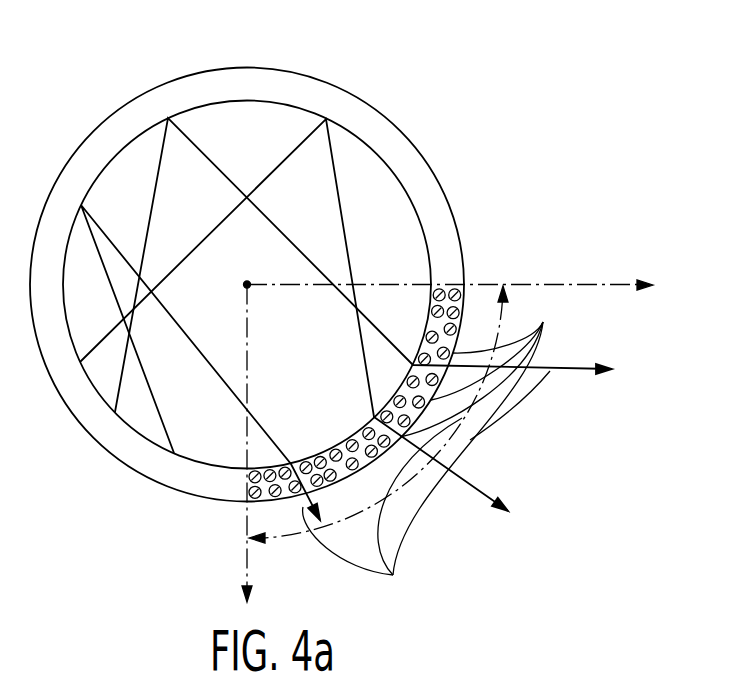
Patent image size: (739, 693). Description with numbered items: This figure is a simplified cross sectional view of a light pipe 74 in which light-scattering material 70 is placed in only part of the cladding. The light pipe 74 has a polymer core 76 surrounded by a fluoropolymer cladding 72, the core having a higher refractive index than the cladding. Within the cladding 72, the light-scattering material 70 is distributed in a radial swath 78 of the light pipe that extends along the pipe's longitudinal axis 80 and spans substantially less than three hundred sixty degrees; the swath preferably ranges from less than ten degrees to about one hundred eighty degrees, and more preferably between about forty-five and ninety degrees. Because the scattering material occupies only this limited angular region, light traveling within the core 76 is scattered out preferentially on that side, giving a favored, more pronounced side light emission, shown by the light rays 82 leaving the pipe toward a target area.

The light-scattering material 70 is at (543, 322).
The fluoropolymer cladding 72 is at (447, 210).
The light pipe 74 is at (291, 254).
The polymer core 76 is at (118, 163).
The radial swath 78 is at (282, 539).
The longitudinal axis 80 is at (244, 283).
The light rays 82 is at (393, 575).